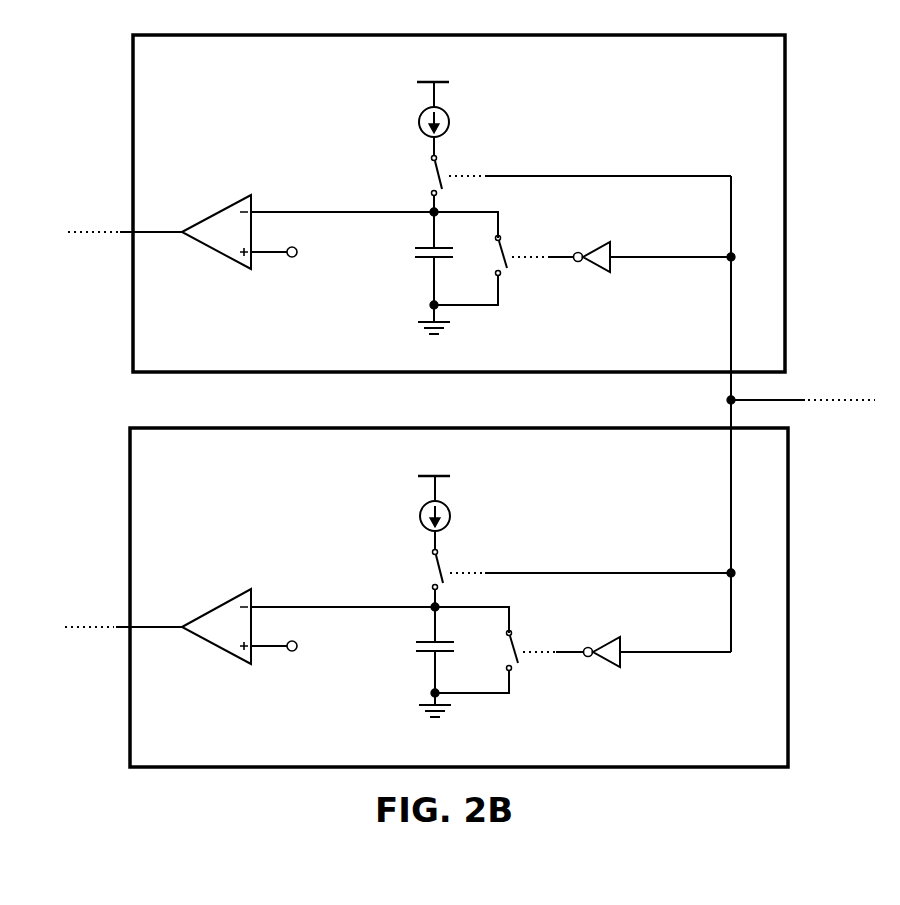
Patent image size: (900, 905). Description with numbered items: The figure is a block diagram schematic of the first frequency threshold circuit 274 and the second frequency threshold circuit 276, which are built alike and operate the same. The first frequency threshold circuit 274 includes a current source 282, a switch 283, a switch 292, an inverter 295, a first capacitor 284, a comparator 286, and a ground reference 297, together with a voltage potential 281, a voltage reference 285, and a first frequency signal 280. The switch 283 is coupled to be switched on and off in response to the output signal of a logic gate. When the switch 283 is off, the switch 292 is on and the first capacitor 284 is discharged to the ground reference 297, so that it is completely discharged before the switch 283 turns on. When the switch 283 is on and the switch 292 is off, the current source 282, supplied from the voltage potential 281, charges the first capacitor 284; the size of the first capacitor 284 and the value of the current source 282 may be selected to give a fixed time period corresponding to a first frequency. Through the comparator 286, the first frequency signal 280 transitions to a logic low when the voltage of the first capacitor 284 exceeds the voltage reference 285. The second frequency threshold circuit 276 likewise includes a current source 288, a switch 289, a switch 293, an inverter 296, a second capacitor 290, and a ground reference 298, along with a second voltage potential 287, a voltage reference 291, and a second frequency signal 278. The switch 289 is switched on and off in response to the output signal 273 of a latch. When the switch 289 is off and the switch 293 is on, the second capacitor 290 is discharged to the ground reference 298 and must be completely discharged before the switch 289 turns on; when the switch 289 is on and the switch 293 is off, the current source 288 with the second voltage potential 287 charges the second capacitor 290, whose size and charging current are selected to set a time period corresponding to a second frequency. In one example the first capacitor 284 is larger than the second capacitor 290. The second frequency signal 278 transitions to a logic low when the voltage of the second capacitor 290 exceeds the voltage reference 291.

The output signal 273 is at (828, 392).
The first frequency threshold circuit 274 is at (132, 67).
The second frequency threshold circuit 276 is at (130, 460).
The second frequency signal 278 is at (86, 599).
The first frequency signal 280 is at (90, 207).
The voltage potential 281 is at (455, 72).
The current source 282 is at (418, 120).
The switch 283 is at (428, 183).
The first capacitor 284 is at (414, 270).
The voltage reference 285 is at (318, 272).
The comparator 286 is at (216, 207).
The second voltage potential 287 is at (456, 466).
The current source 288 is at (417, 514).
The switch 289 is at (421, 578).
The second capacitor 290 is at (419, 667).
The voltage reference 291 is at (318, 657).
The switch 292 is at (509, 232).
The switch 293 is at (522, 627).
The inverter 295 is at (604, 273).
The inverter 296 is at (600, 669).
The ground reference 297 is at (452, 333).
The ground reference 298 is at (458, 720).